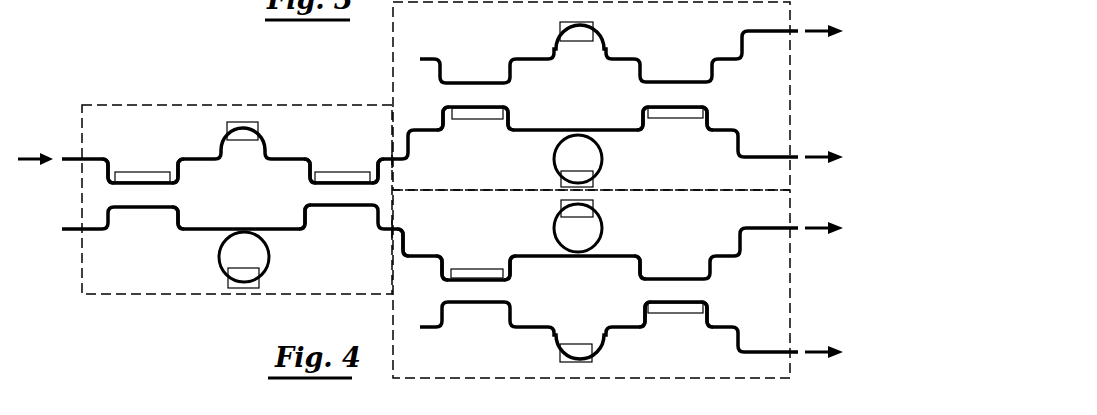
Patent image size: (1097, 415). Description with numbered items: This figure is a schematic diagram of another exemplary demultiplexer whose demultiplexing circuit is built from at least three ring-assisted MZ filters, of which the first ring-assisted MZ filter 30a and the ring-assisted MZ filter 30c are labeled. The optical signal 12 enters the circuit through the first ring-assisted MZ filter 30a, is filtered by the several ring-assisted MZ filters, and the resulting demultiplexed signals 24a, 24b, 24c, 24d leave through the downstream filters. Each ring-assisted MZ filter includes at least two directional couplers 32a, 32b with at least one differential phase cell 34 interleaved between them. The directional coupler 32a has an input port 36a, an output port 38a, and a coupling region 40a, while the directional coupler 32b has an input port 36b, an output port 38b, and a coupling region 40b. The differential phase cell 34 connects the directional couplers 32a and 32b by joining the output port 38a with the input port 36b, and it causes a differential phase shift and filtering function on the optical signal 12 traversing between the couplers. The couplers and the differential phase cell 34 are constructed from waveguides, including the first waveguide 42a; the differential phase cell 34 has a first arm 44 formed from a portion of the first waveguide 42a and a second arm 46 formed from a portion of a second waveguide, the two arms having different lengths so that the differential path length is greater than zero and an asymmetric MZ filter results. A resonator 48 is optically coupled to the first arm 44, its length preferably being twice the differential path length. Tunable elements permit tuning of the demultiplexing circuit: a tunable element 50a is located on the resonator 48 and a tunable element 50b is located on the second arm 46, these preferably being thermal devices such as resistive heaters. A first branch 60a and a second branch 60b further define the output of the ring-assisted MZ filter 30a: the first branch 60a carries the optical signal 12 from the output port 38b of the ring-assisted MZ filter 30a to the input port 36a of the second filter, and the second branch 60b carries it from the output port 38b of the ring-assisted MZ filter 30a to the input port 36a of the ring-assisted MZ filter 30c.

The optical signal 12 is at (28, 151).
The demultiplexed signal 24a is at (815, 28).
The demultiplexed signal 24b is at (815, 154).
The demultiplexed signal 24c is at (815, 226).
The demultiplexed signal 24d is at (815, 350).
The first ring-assisted MZ filter 30a is at (165, 104).
The third ring-assisted MZ filter 30c is at (393, 325).
The directional coupler 32a is at (121, 244).
The directional coupler 32b is at (345, 236).
The differential phase cell 34 is at (287, 141).
The input port 36a is at (113, 168).
The input port 36b is at (312, 168).
The output port 38a is at (172, 168).
The output port 38b is at (371, 168).
The coupling region 40a is at (143, 170).
The coupling region 40b is at (342, 170).
The first waveguide 42a is at (181, 236).
The first arm 44 is at (305, 233).
The second arm 46 is at (263, 137).
The resonator 48 is at (218, 258).
The tunable element 50a is at (228, 282).
The tunable element 50b is at (227, 131).
The first branch 60a is at (391, 136).
The second branch 60b is at (391, 270).